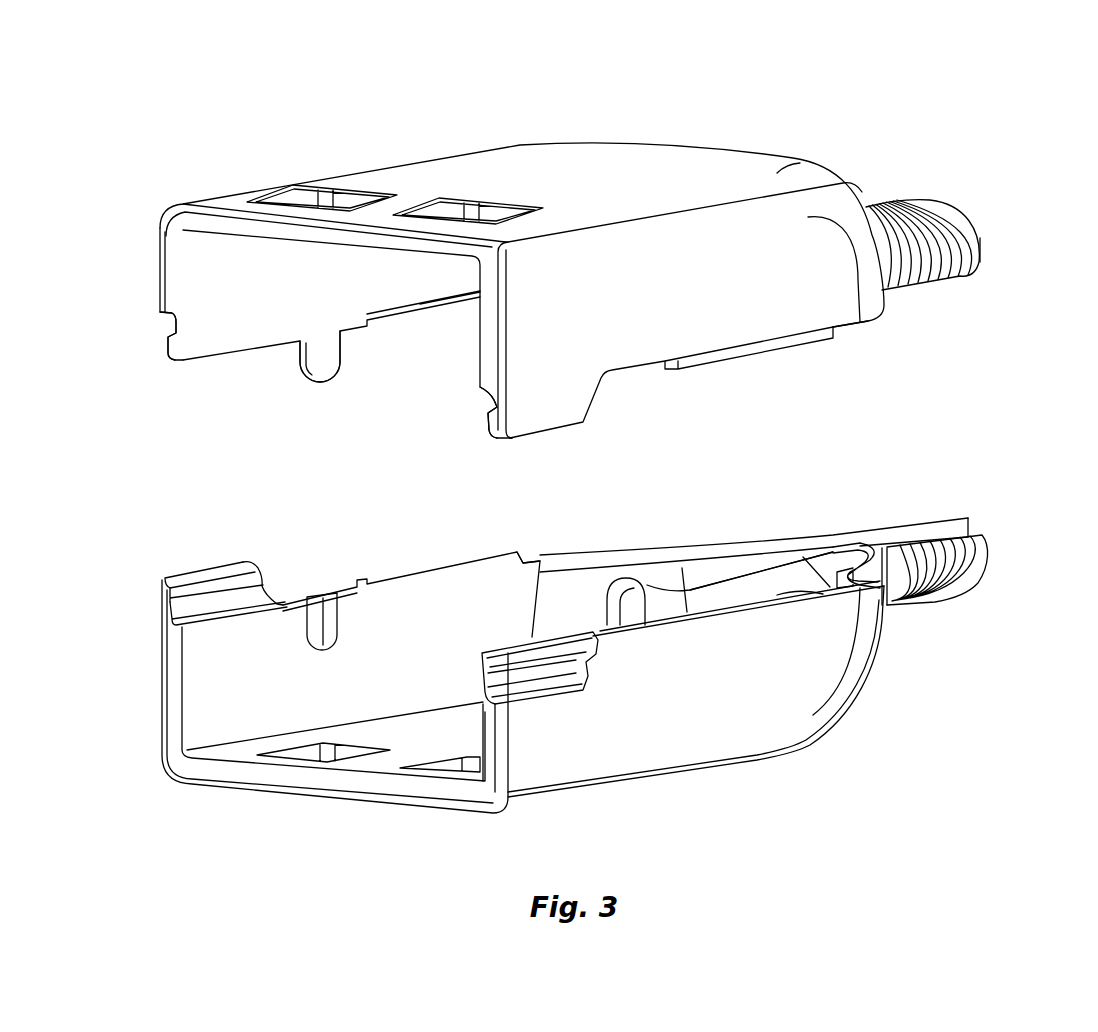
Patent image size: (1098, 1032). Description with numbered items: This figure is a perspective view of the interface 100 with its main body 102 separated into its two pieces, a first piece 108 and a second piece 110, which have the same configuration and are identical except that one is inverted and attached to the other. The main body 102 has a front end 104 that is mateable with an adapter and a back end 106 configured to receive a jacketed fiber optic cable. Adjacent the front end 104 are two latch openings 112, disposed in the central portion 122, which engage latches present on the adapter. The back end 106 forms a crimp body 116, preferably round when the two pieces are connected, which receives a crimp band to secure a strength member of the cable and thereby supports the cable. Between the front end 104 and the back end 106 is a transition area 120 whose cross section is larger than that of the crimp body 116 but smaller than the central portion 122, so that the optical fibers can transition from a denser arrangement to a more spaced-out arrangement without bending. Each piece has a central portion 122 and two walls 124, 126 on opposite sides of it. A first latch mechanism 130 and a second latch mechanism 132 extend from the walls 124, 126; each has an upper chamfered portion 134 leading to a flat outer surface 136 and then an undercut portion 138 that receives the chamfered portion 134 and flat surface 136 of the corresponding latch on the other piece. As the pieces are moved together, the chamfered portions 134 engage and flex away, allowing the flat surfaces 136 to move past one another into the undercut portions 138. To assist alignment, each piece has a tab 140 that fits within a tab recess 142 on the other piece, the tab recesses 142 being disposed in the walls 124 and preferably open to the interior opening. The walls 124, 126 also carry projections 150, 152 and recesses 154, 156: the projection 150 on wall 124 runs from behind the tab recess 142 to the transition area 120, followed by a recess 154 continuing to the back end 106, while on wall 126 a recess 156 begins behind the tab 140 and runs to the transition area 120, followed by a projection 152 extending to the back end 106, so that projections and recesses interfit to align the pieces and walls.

The interface 100 is at (858, 104).
The main body 102 is at (92, 200).
The front end 104 is at (354, 764).
The back end 106 is at (906, 188).
The first piece 108 is at (700, 773).
The second piece 110 is at (693, 142).
The latch openings 112 is at (508, 195).
The crimp body 116 is at (980, 246).
The transition area 120 is at (876, 307).
The central portion 122 is at (648, 188).
The wall 124 is at (671, 310).
The wall 126 is at (289, 290).
The first latch mechanism 130 is at (170, 364).
The second latch mechanism 132 is at (485, 425).
The upper chamfered portion 134 is at (170, 583).
The flat outer surface 136 is at (176, 606).
The undercut portion 138 is at (183, 618).
The tab 140 is at (324, 370).
The tab recess 142 is at (318, 634).
The projection 150 is at (516, 548).
The projection 152 is at (975, 525).
The recess 154 is at (737, 553).
The recess 156 is at (441, 305).